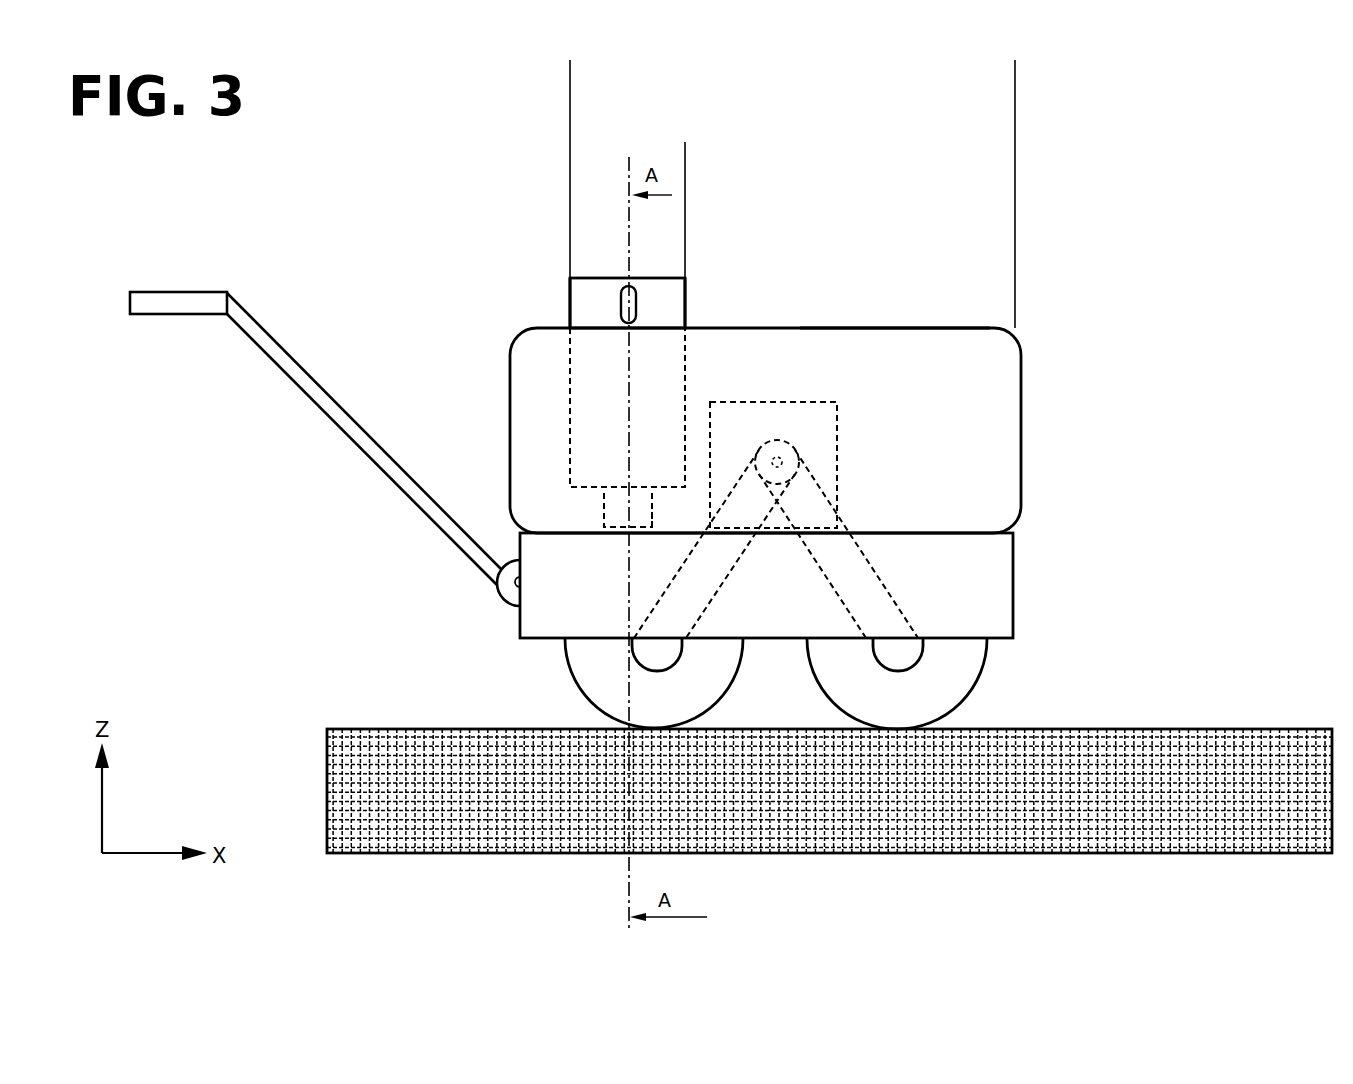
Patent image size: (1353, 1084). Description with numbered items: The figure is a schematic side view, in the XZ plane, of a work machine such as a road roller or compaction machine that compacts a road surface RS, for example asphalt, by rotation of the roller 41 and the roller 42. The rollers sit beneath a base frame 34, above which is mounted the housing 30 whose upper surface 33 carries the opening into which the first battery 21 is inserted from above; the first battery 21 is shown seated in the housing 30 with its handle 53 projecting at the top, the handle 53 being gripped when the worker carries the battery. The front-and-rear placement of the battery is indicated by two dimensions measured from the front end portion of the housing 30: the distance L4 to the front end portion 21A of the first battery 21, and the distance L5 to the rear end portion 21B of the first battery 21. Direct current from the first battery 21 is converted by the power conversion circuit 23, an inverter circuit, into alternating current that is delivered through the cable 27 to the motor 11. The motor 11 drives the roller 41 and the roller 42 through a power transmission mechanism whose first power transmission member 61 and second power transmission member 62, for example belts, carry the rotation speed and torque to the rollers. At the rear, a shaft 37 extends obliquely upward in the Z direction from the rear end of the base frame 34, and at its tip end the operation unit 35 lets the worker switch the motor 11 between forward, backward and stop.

The motor 11 is at (805, 400).
The first battery 21 is at (600, 302).
The front end portion of the first battery 21A is at (688, 303).
The rear end portion of the first battery 21B is at (570, 315).
The power conversion circuit 23 is at (598, 508).
The cable 27 is at (657, 518).
The housing 30 is at (1022, 425).
The upper surface of the housing 33 is at (965, 328).
The base frame 34 is at (1013, 607).
The operation unit 35 is at (186, 291).
The shaft 37 is at (300, 385).
The roller 41 is at (985, 662).
The roller 42 is at (583, 655).
The handle 53 is at (618, 288).
The first power transmission member 61 is at (897, 590).
The second power transmission member 62 is at (737, 568).
The road surface RS is at (350, 728).
The distance between front end portion of housing and front end portion of first bat L4 is at (993, 166).
The distance between front end portion of housing and rear end portion of first batt L5 is at (993, 92).